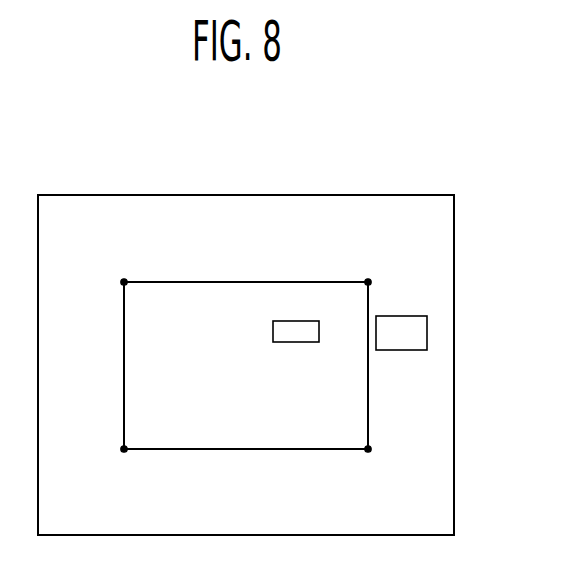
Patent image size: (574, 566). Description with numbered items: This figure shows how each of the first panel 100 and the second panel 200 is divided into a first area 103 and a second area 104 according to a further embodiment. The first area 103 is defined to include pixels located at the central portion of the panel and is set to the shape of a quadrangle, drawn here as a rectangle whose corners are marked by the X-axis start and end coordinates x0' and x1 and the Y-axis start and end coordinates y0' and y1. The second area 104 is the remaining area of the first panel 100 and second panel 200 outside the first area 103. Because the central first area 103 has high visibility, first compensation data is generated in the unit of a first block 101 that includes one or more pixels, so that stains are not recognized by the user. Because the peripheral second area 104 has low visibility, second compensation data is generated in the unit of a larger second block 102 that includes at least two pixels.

The first panel 100 is at (249, 193).
The second panel 200 is at (246, 328).
The first block 101 is at (298, 321).
The second block 102 is at (427, 333).
The first area 103 is at (340, 407).
The second area 104 is at (442, 251).